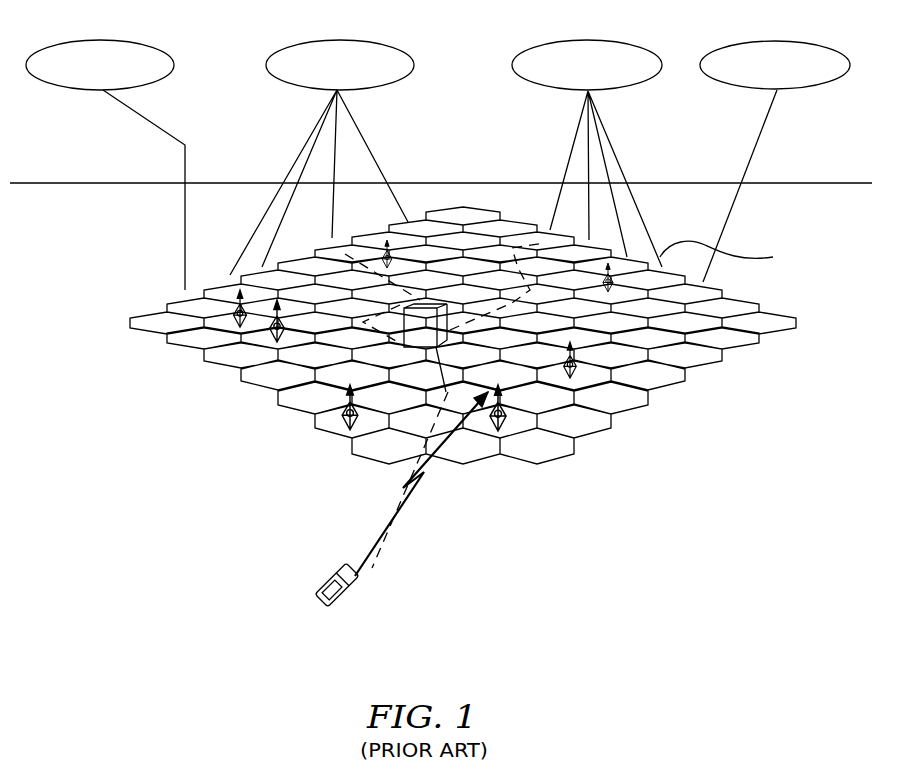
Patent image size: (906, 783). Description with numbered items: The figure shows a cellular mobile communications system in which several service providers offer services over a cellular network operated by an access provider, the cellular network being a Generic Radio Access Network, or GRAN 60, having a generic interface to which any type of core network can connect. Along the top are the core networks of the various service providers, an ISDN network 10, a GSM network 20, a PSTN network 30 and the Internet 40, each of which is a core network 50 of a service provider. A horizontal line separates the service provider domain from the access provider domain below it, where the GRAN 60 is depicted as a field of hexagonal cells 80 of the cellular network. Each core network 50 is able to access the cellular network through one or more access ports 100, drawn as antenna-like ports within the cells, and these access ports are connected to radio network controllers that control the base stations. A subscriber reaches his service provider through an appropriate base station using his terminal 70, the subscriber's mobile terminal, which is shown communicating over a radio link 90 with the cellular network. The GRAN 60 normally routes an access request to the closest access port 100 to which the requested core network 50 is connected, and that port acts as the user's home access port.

The ISDN network 10 is at (112, 41).
The GSM network 20 is at (353, 41).
The PSTN network 30 is at (600, 41).
The Internet 40 is at (787, 41).
The core network 50 is at (117, 129).
The GRAN 60 is at (107, 200).
The terminal 70 is at (320, 578).
The cell of access area 80 is at (278, 390).
The radio link to mobile terminal 90 is at (428, 510).
The access port 100 is at (703, 283).